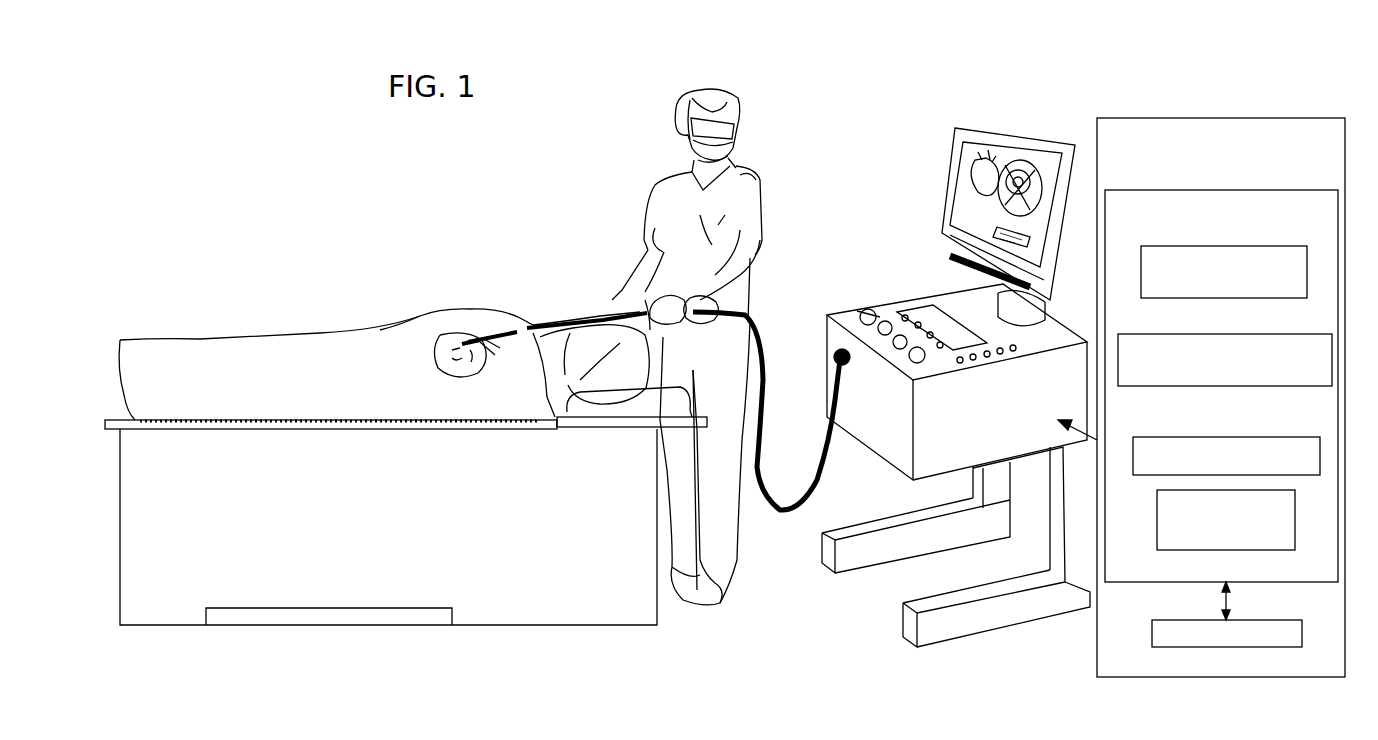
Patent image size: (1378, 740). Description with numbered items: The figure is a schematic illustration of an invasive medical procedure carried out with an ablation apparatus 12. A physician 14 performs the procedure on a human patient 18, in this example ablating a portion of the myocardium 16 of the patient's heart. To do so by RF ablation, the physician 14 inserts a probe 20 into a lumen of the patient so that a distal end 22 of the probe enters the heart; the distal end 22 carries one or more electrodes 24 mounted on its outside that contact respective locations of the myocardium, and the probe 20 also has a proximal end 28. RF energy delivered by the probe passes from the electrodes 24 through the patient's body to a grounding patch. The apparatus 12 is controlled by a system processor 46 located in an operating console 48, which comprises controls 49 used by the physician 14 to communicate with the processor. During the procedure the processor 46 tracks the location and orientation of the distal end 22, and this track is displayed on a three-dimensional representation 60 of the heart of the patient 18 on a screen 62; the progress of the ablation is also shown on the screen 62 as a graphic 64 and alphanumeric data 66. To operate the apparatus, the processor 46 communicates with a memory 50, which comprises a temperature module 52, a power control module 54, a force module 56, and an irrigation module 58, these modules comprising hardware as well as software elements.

The ablation apparatus 12 is at (842, 122).
The physician 14 is at (708, 92).
The myocardium 16 is at (445, 335).
The patient 18 is at (203, 360).
The probe 20 is at (553, 322).
The distal end 22 is at (484, 287).
The electrodes 24 is at (402, 285).
The proximal end 28 is at (838, 355).
The system processor 46 is at (1163, 648).
The operating console 48 is at (905, 290).
The controls 49 is at (870, 300).
The memory 50 is at (1122, 583).
The temperature module 52 is at (1302, 246).
The power control module 54 is at (1220, 387).
The force module 56 is at (1318, 437).
The irrigation module 58 is at (1297, 503).
The three-dimensional representation 60 is at (975, 135).
The screen 62 is at (950, 140).
The graphic 64 is at (1022, 150).
The alphanumeric data 66 is at (995, 227).